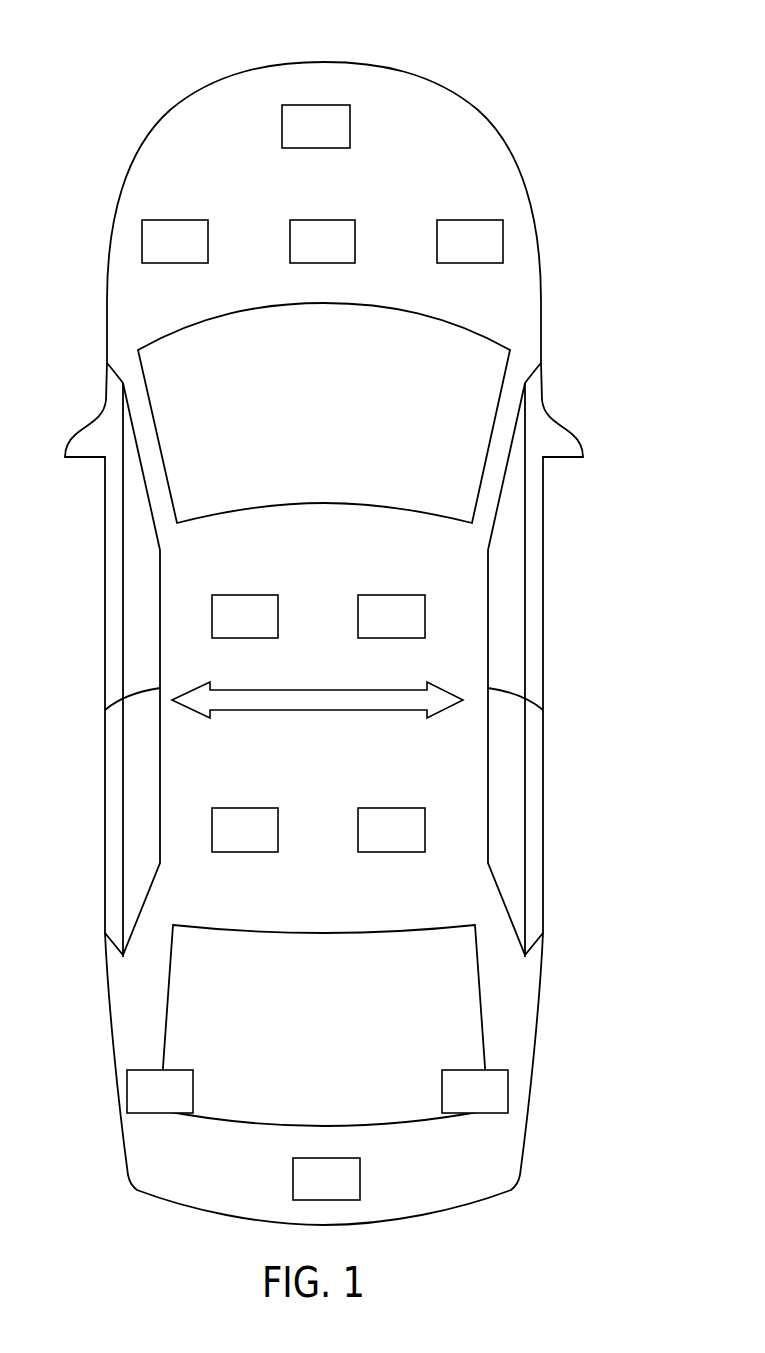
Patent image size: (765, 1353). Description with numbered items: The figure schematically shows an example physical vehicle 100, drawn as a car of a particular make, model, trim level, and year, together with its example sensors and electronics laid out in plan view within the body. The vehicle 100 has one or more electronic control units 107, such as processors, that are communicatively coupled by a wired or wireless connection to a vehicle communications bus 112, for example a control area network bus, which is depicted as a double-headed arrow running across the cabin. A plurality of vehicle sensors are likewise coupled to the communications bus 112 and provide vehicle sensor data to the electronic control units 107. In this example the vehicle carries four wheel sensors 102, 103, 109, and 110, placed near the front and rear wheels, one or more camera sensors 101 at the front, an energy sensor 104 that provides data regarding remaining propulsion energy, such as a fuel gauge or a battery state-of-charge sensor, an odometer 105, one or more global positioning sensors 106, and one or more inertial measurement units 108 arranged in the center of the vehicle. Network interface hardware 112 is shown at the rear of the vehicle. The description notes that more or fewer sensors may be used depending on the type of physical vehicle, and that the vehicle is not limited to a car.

The physical vehicle 100 is at (347, 614).
The camera sensor 101 is at (282, 127).
The wheel sensor 102 is at (174, 220).
The wheel sensor 103 is at (470, 220).
The energy sensor 104 is at (322, 220).
The odometer 105 is at (245, 595).
The global positioning sensor 106 is at (392, 595).
The electronic control unit 107 is at (245, 808).
The inertial measurement unit 108 is at (392, 808).
The wheel sensor 109 is at (160, 1113).
The wheel sensor 110 is at (475, 1113).
The vehicle communications bus 112 is at (300, 690).